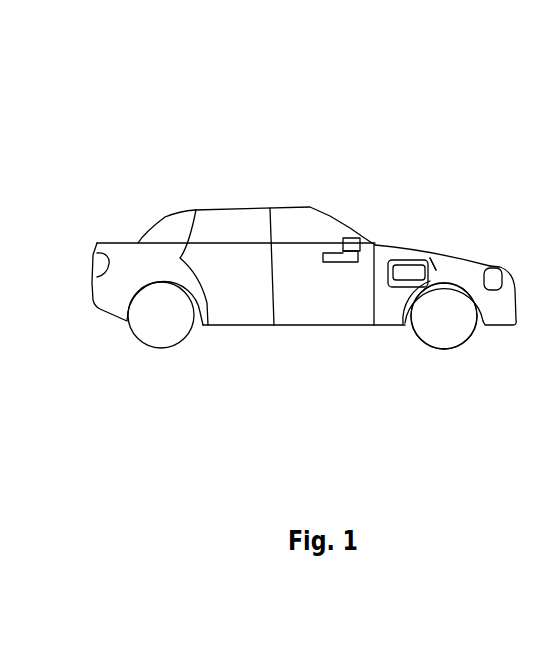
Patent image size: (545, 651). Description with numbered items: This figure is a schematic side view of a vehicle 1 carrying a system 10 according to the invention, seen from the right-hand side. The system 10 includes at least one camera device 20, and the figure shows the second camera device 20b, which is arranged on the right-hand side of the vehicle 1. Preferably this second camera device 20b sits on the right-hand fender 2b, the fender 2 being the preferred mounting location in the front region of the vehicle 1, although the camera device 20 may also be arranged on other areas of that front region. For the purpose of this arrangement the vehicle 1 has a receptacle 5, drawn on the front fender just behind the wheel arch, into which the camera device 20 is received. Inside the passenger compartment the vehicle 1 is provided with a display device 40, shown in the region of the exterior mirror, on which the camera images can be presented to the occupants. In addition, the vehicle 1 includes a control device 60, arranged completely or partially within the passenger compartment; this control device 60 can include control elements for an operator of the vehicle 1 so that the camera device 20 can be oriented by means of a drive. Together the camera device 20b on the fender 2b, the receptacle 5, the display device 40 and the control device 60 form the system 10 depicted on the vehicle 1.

The vehicle 1 is at (463, 258).
The system 10 is at (238, 100).
The fender 2 is at (442, 310).
The right-hand fender 2b is at (444, 316).
The camera device 20 is at (430, 258).
The second camera device 20b is at (433, 264).
The display device 40 is at (366, 243).
The control device 60 is at (325, 262).
The receptacle 5 is at (390, 283).